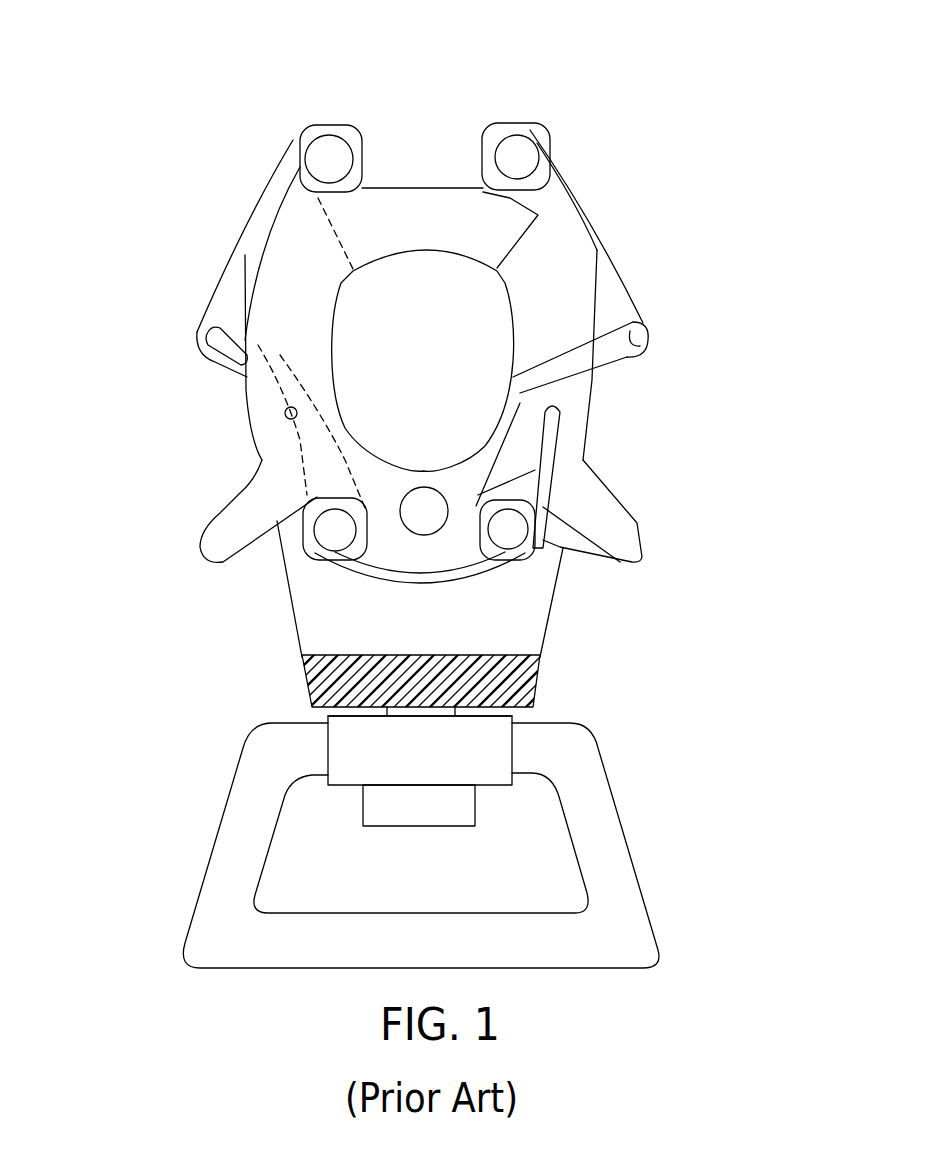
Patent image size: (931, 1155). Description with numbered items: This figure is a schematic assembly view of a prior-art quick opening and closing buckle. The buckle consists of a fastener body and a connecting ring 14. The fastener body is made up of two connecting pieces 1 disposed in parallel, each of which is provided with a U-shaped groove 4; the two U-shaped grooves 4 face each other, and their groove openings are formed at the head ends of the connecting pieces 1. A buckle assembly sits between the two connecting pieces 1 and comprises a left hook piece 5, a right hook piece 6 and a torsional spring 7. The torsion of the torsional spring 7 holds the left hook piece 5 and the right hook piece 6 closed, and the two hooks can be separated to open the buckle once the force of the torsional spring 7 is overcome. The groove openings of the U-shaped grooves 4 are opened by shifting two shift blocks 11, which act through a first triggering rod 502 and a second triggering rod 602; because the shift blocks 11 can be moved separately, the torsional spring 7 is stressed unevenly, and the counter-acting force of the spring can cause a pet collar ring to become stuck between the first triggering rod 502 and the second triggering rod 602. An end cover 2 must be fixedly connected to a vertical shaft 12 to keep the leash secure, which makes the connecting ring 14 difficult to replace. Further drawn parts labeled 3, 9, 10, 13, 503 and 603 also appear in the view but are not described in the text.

The connecting piece 1 is at (692, 620).
The end cover 2 is at (732, 844).
The cushion pad 3 is at (697, 712).
The U-shaped groove 4 is at (483, 172).
The left hook piece 5 is at (282, 287).
The right hook piece 6 is at (557, 263).
The torsional spring 7 is at (778, 596).
The ring hole 9 is at (590, 40).
The lug 10 is at (203, 122).
The shift block 11 is at (127, 553).
The vertical shaft 12 is at (437, 713).
The mounting block 13 is at (332, 730).
The connecting ring 14 is at (735, 788).
The first triggering rod 502 is at (637, 318).
The pin 503 is at (285, 412).
The second triggering rod 602 is at (210, 330).
The connecting pin strip 603 is at (697, 407).